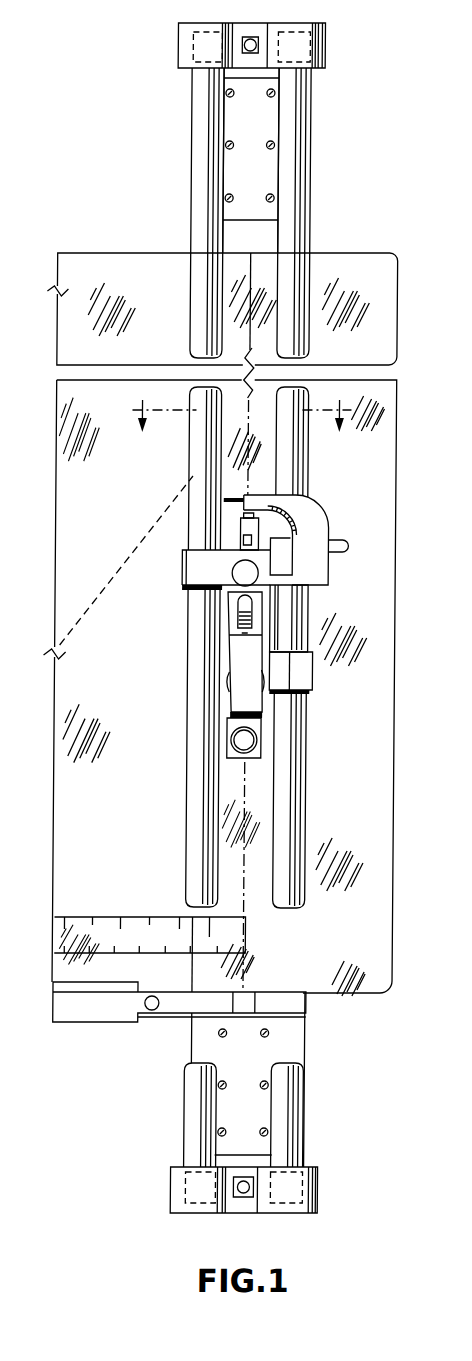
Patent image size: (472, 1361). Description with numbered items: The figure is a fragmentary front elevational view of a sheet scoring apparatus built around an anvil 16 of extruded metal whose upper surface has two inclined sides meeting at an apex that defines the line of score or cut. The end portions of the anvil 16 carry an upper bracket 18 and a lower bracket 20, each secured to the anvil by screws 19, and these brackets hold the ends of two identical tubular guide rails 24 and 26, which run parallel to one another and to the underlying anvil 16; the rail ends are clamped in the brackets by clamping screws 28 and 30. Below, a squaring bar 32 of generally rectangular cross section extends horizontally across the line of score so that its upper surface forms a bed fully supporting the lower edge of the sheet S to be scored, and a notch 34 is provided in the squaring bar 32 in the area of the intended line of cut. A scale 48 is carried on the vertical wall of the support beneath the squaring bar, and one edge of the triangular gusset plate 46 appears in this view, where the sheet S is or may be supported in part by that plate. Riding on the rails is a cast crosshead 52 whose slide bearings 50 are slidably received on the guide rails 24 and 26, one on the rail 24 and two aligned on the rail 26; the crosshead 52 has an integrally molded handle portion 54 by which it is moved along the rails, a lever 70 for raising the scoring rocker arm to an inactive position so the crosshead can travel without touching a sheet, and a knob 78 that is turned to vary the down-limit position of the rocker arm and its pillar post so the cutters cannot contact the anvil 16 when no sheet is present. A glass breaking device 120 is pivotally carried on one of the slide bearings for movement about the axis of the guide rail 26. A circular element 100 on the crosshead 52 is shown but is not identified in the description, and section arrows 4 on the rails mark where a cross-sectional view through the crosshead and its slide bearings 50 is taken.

The anvil 16 is at (309, 942).
The upper bracket 18 is at (319, 41).
The screws 19 is at (265, 141).
The lower bracket 20 is at (322, 1183).
The guide rail 24 is at (188, 800).
The guide rail 26 is at (308, 800).
The clamping screw 28 is at (244, 37).
The clamping screw 30 is at (248, 1198).
The squaring bar 32 is at (294, 1015).
The notch 34 is at (256, 1004).
The gusset plate 46 is at (118, 565).
The scale 48 is at (116, 915).
The slide bearings 50 is at (195, 590).
The crosshead 52 is at (342, 566).
The handle portion 54 is at (230, 673).
The lever 70 is at (238, 607).
The knob 78 is at (259, 739).
The knob 100 is at (234, 567).
The glass breaking device 120 is at (321, 497).
The sheet S is at (384, 515).
The section line 4- 4 is at (242, 433).